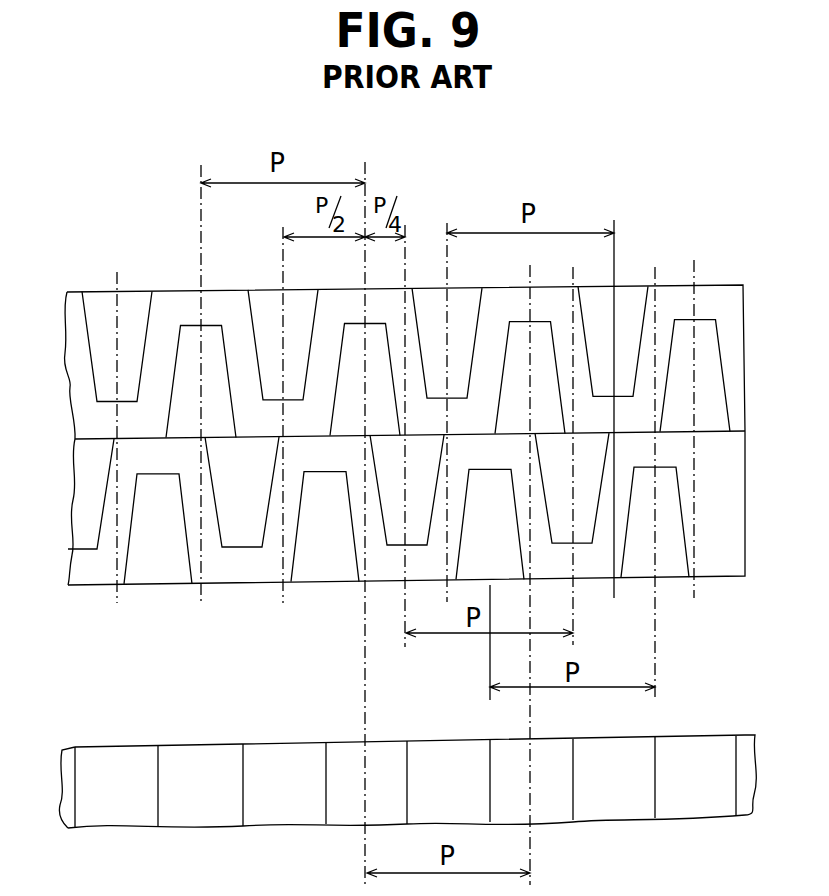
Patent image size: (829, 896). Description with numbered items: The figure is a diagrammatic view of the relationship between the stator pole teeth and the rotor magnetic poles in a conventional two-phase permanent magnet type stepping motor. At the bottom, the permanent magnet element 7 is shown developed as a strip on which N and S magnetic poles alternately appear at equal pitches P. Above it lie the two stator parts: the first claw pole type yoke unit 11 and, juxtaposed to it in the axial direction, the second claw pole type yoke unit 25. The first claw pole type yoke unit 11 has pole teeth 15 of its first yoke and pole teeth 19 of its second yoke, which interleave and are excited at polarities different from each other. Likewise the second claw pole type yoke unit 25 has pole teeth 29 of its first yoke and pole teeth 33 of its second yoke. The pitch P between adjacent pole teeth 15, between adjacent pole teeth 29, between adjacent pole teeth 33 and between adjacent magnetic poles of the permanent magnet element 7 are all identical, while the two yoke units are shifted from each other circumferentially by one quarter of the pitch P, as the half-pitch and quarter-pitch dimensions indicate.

The permanent magnet element 7 is at (730, 733).
The first claw pole type yoke unit 11 is at (411, 334).
The pole teeth 15 is at (132, 307).
The pole teeth 19 is at (210, 333).
The second claw pole type yoke unit 25 is at (417, 534).
The pole teeth 29 is at (240, 532).
The pole teeth 33 is at (153, 482).